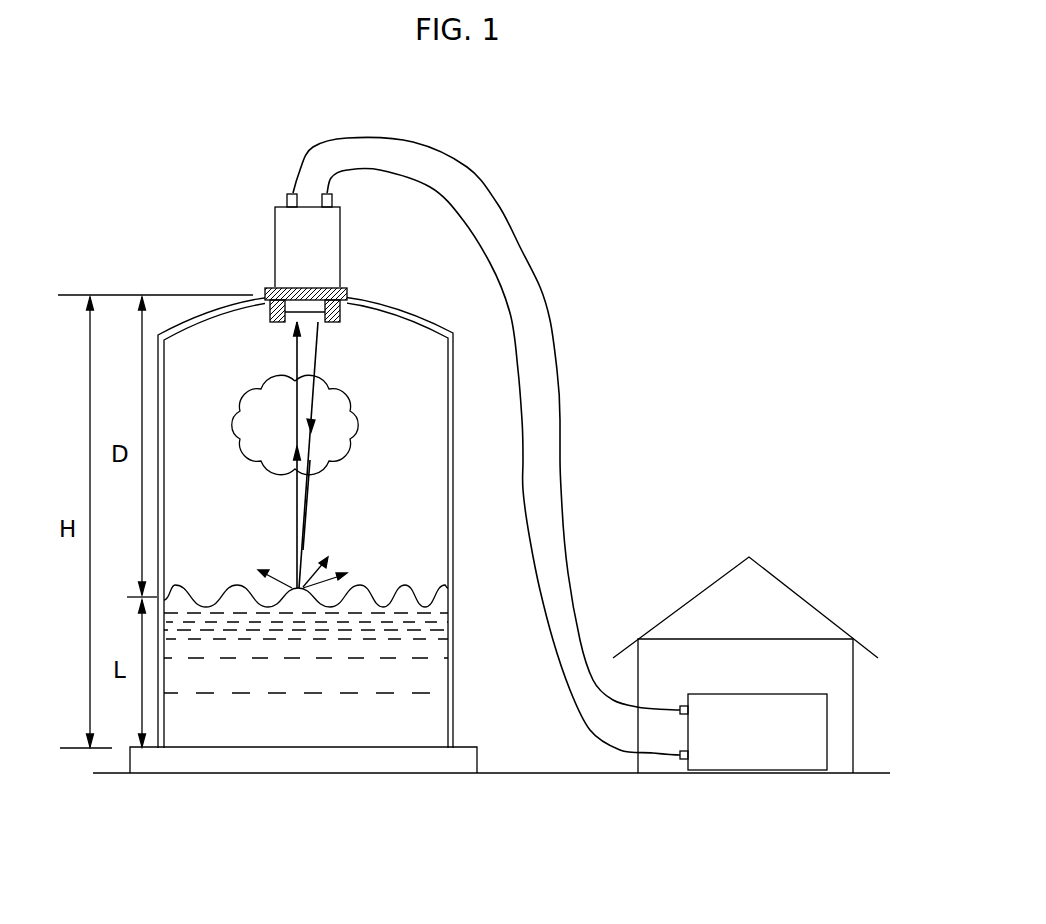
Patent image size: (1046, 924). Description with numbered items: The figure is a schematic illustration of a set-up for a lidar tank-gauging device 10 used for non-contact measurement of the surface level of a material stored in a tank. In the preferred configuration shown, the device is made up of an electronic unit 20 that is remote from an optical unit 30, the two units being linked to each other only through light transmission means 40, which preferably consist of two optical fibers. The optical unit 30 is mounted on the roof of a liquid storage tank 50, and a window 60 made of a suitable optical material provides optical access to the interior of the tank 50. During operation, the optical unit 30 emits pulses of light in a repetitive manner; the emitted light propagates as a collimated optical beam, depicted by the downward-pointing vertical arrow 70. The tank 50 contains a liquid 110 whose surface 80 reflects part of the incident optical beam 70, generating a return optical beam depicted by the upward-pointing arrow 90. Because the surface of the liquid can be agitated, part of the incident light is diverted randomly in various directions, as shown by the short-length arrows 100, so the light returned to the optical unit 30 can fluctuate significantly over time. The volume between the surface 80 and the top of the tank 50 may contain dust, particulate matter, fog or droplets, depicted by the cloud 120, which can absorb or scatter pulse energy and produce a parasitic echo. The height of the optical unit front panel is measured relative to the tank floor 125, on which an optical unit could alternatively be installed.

The lidar tank-gauging device 10 is at (661, 171).
The electronic unit 20 is at (738, 694).
The optical unit 30 is at (343, 247).
The light transmission means 40 is at (540, 276).
The liquid storage tank 50 is at (395, 310).
The window 60 is at (318, 325).
The incident optical beam 70 is at (308, 512).
The liquid surface 80 is at (363, 593).
The return optical beam 90 is at (293, 338).
The short-length arrows 100 is at (305, 583).
The liquid 110 is at (430, 675).
The cloud 120 is at (362, 412).
The tank floor 125 is at (328, 748).